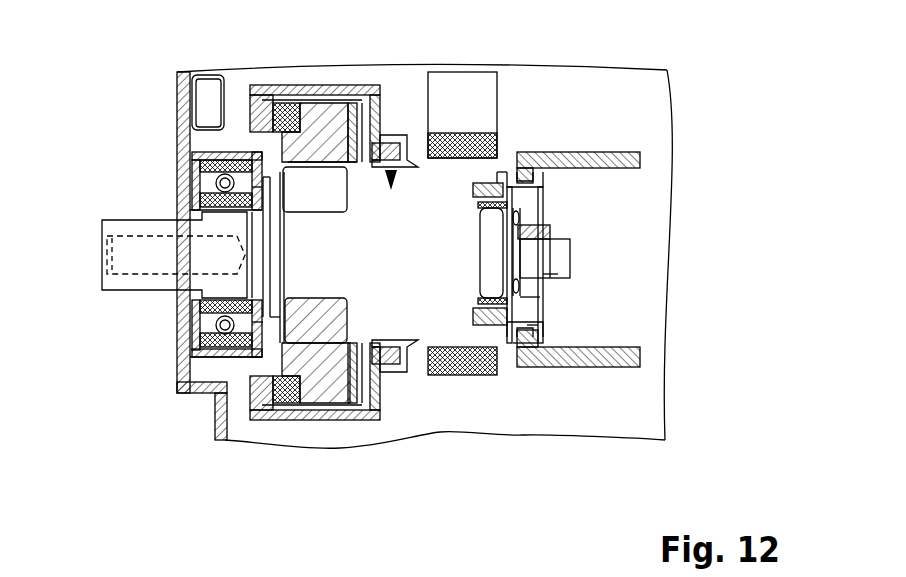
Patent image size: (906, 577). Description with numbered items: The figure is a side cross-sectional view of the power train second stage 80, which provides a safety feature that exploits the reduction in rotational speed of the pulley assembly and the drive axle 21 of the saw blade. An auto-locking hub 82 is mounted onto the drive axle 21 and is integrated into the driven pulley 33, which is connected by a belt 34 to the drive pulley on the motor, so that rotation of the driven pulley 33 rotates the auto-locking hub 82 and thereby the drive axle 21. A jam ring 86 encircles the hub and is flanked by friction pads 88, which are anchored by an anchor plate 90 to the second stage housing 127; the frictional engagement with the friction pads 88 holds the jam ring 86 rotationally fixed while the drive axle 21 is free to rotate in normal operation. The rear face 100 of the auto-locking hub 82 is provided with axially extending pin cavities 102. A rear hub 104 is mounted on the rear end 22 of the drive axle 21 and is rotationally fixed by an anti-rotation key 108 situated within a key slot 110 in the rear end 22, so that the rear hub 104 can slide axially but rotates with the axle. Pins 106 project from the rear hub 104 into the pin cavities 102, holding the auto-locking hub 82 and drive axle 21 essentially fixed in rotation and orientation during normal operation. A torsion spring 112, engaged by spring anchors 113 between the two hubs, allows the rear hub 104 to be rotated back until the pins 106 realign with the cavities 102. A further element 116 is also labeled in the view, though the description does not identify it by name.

The second stage 80 is at (152, 118).
The drive axle 21 is at (122, 200).
The anchor plate 90 is at (267, 120).
The jam ring 86 is at (318, 120).
The auto-locking hub 82 is at (380, 135).
The second stage housing 127 is at (391, 172).
The belt 34 is at (475, 84).
The driven pulley 33 is at (498, 170).
The rear face 100 is at (492, 170).
The end plate 116 is at (587, 154).
The anti-rotation key 108 is at (549, 227).
The key slot 110 is at (546, 246).
The rear end 22 is at (558, 274).
The torsion spring 112 is at (520, 296).
The rear hub 104 is at (527, 325).
The pins 106 is at (500, 326).
The spring anchors 113 is at (480, 204).
The pin cavities 102 is at (475, 313).
The friction pads 88 is at (353, 400).